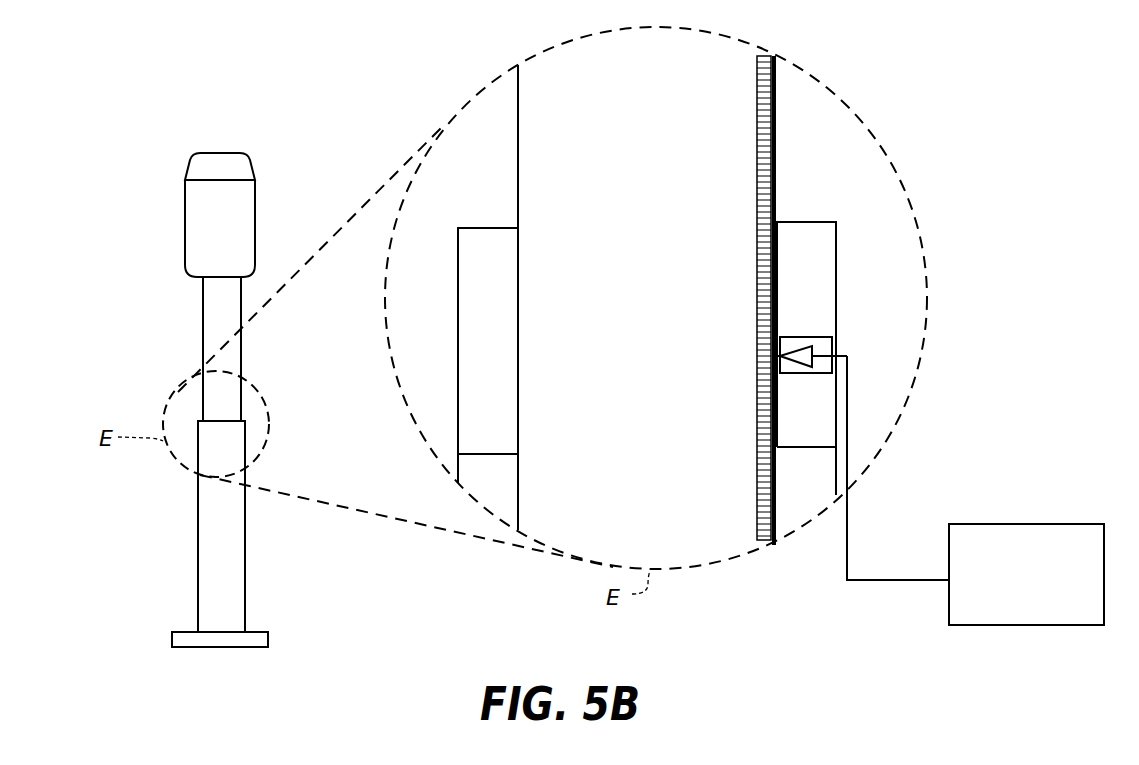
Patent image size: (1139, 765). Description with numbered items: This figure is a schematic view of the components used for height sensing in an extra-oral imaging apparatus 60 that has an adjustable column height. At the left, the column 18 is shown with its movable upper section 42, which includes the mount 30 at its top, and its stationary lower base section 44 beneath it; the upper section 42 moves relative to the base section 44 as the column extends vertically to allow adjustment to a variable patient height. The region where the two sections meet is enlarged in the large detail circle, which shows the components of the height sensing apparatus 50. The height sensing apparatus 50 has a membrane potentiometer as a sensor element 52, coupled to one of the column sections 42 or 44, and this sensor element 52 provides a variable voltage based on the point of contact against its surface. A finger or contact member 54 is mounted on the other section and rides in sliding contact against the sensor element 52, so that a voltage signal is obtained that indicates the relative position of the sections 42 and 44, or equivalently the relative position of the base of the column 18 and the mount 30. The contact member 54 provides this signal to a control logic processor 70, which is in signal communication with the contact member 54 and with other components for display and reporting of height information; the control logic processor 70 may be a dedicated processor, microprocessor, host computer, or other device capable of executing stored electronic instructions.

The column 18 is at (246, 548).
The mount 30 is at (195, 202).
The movable upper section 42 is at (204, 352).
The stationary lower base section 44 is at (198, 537).
The height sensing apparatus 50 is at (1020, 386).
The sensor element 52 is at (758, 183).
The contact member 54 is at (797, 355).
The extra-oral imaging apparatus 60 is at (104, 168).
The control logic processor 70 is at (1050, 530).